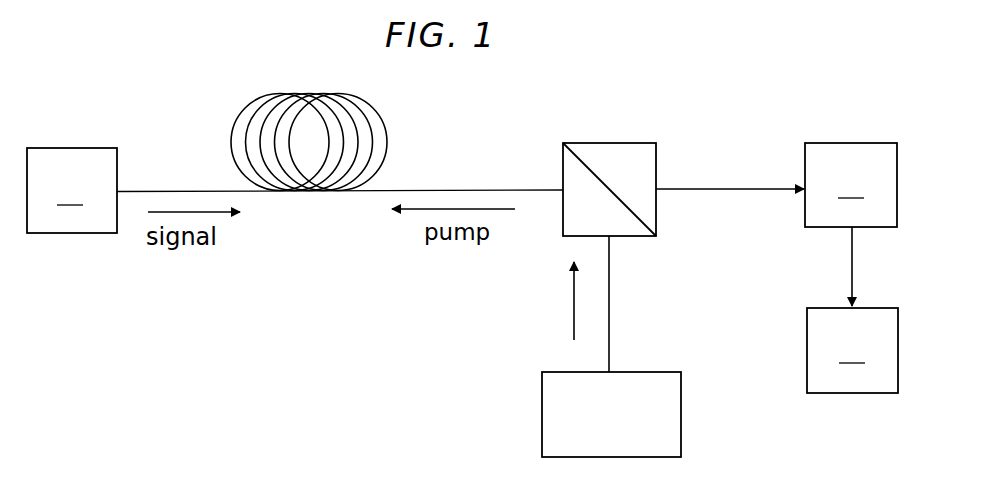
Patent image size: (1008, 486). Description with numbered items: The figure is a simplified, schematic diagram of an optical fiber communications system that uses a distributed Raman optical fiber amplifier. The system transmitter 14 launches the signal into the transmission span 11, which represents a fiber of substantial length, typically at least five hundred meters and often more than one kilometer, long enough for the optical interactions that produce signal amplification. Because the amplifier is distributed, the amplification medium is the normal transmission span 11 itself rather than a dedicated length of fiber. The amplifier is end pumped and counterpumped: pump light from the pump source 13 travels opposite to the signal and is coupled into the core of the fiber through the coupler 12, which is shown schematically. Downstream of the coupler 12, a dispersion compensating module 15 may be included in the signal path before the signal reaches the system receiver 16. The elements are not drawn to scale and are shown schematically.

The transmission span 11 is at (235, 110).
The coupler 12 is at (658, 218).
The pump source 13 is at (682, 403).
The system transmitter 14 is at (72, 190).
The dispersion compensating module 15 is at (851, 185).
The system receiver 16 is at (852, 350).